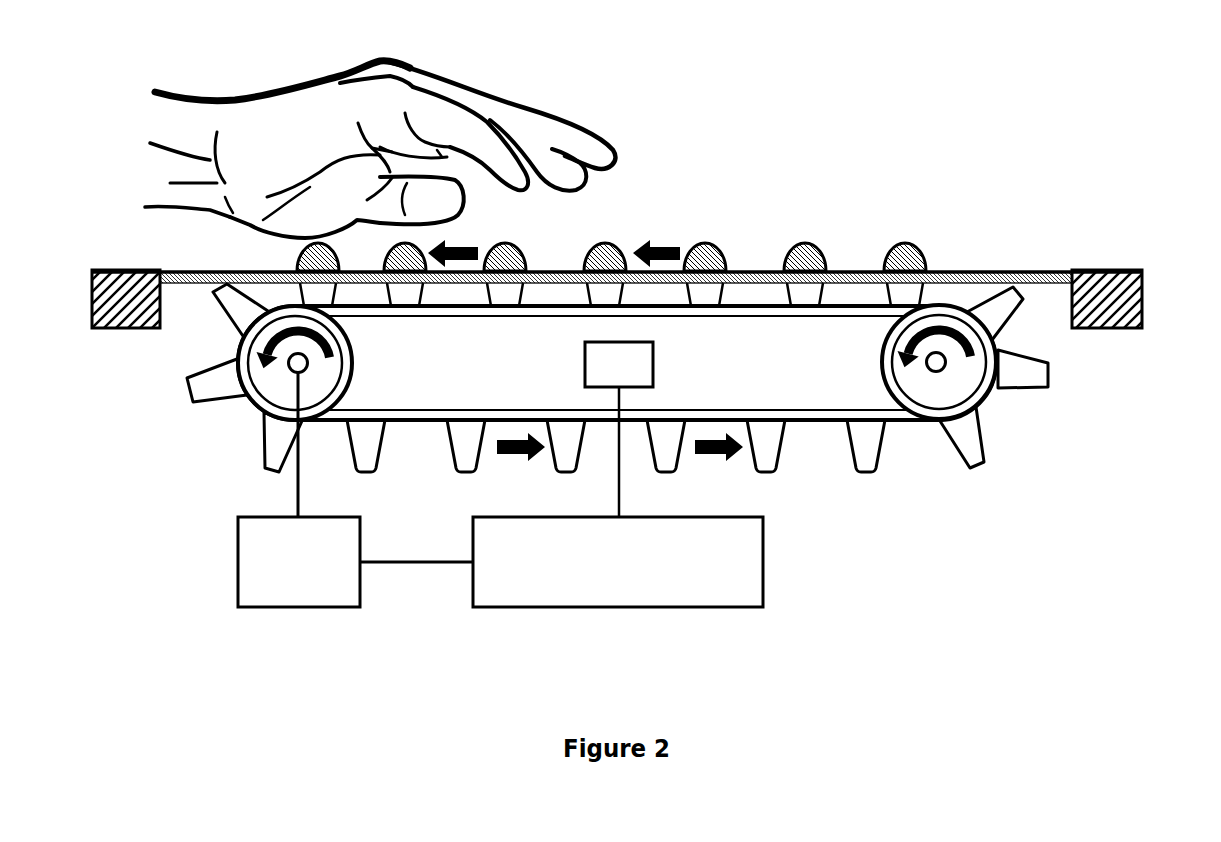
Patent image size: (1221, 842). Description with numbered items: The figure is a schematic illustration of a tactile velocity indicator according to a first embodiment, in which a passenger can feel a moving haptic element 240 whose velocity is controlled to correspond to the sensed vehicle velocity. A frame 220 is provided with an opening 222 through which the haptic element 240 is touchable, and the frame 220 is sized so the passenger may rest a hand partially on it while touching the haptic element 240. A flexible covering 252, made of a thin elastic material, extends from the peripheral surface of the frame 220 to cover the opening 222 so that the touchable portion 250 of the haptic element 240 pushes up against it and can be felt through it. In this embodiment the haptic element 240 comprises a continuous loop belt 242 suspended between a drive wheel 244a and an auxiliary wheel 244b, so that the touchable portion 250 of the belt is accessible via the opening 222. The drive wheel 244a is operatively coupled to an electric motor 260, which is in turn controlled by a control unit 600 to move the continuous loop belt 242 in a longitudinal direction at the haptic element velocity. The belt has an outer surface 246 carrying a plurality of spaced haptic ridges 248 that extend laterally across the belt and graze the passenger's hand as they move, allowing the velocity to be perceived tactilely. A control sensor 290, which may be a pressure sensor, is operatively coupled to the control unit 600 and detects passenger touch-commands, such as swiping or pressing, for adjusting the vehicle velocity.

The frame 220 is at (1103, 268).
The opening 222 is at (1002, 235).
The flexible covering 252 is at (1023, 267).
The haptic element 240 is at (695, 355).
The continuous loop belt 242 is at (610, 355).
The drive wheel 244a is at (270, 385).
The auxiliary wheel 244b is at (920, 398).
The outer surface 246 is at (742, 307).
The haptic ridges 248 is at (817, 298).
The touchable portion 250 is at (674, 191).
The electric motor 260 is at (260, 608).
The control sensor 290 is at (585, 378).
The control unit 600 is at (522, 608).